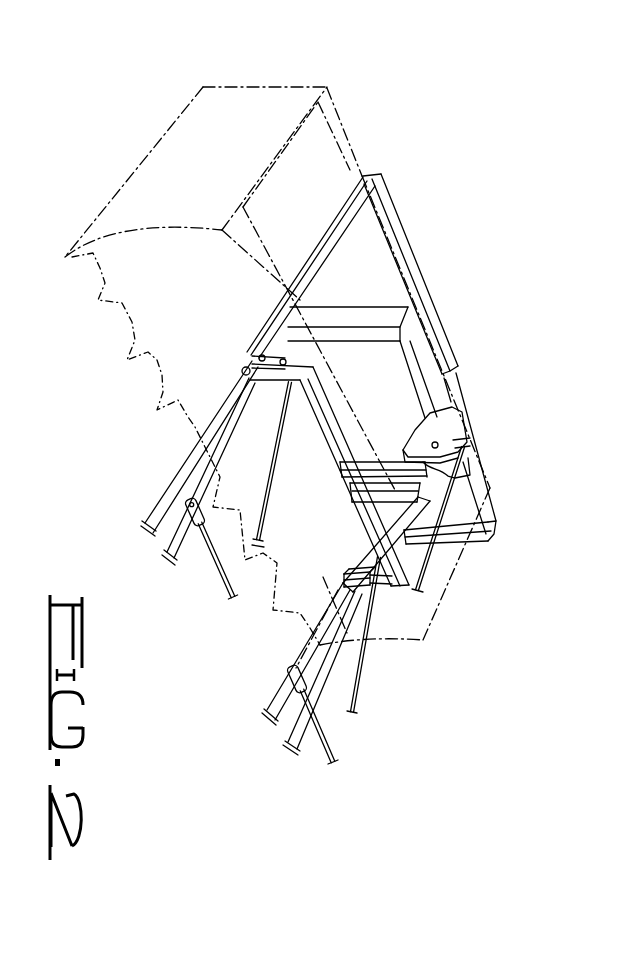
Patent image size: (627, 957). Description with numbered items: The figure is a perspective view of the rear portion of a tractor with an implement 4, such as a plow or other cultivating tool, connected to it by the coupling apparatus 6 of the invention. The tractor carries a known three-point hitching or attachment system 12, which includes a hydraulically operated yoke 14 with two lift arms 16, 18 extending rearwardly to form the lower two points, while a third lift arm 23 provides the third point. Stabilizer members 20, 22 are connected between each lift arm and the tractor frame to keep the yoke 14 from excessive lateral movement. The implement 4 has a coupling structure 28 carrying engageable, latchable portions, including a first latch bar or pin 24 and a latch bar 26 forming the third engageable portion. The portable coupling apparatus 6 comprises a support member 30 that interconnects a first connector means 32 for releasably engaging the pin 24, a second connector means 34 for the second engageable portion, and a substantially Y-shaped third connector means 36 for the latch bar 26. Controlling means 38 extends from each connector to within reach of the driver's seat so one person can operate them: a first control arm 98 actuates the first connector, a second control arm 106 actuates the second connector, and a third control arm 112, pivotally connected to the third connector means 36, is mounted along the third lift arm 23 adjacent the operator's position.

The implement 4 is at (350, 133).
The coupling apparatus 6 is at (240, 337).
The three-point hitching or attachment system 12 is at (142, 490).
The hydraulically operated yoke 14 is at (330, 730).
The lift arm 16 is at (183, 557).
The lift arm 18 is at (278, 697).
The stabilizer member 20 is at (173, 477).
The stabilizer member 22 is at (305, 740).
The third lift arm 23 is at (418, 520).
The first latch bar or pin 24 is at (250, 330).
The latch bar 26 is at (463, 418).
The coupling structure 28 is at (397, 223).
The support member 30 is at (347, 410).
The first connector means 32 is at (240, 355).
The second connector means 34 is at (340, 583).
The third connector means 36 is at (463, 463).
The controlling means 38 is at (260, 488).
The first control arm 98 is at (273, 482).
The second control arm 106 is at (362, 667).
The third control arm 112 is at (433, 560).